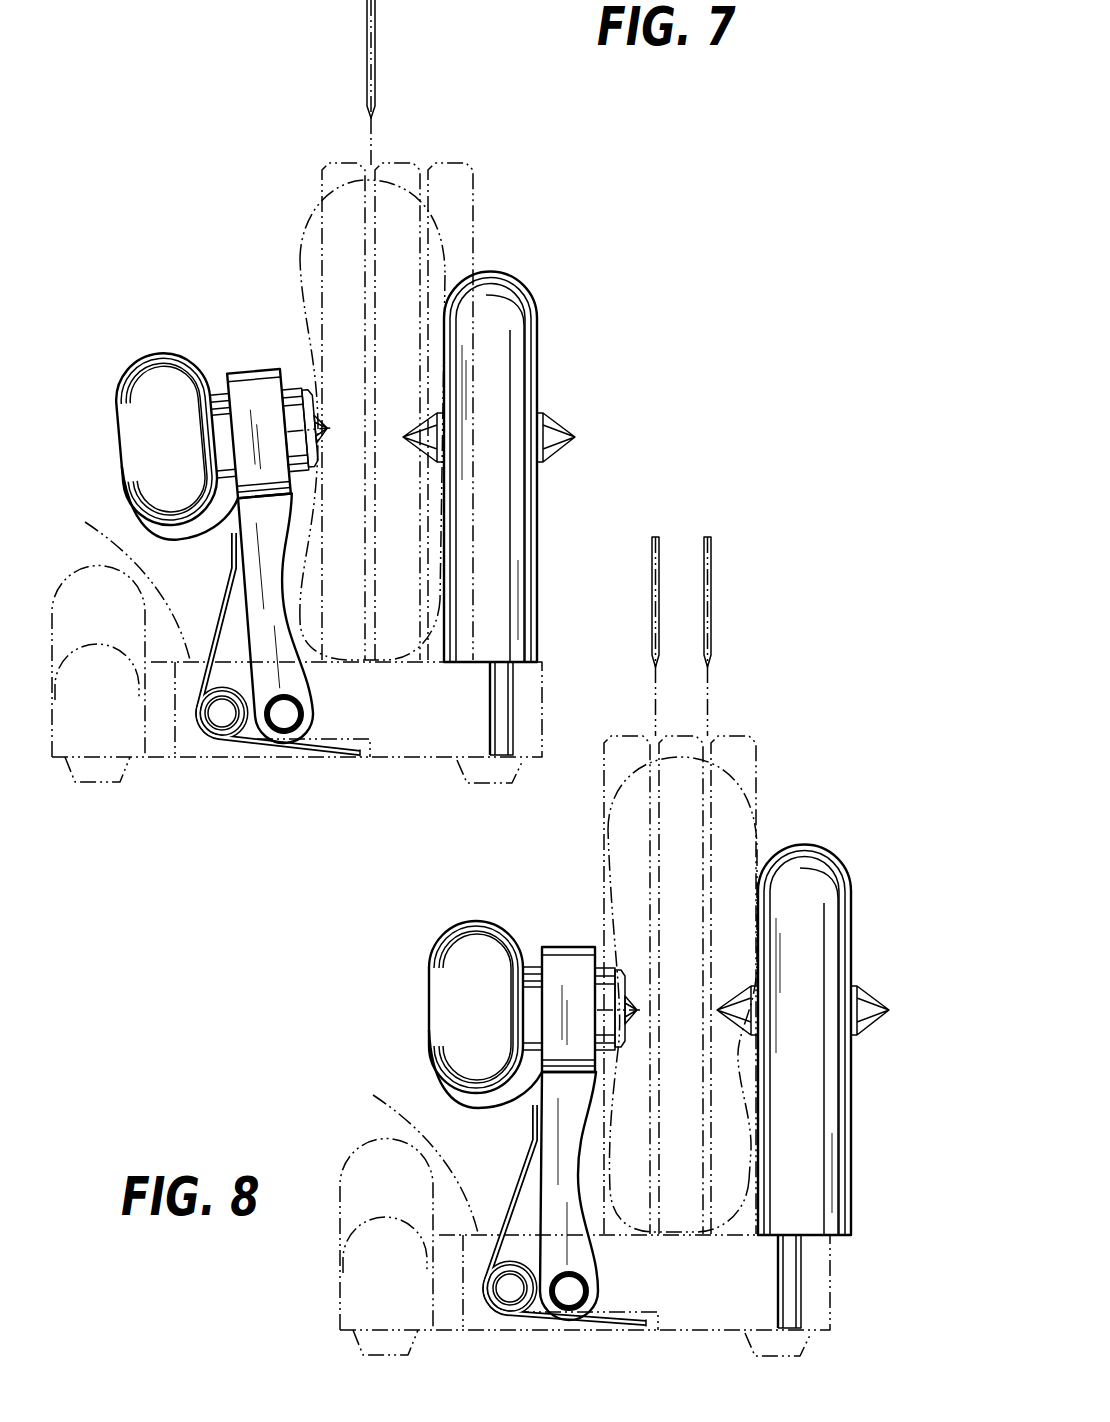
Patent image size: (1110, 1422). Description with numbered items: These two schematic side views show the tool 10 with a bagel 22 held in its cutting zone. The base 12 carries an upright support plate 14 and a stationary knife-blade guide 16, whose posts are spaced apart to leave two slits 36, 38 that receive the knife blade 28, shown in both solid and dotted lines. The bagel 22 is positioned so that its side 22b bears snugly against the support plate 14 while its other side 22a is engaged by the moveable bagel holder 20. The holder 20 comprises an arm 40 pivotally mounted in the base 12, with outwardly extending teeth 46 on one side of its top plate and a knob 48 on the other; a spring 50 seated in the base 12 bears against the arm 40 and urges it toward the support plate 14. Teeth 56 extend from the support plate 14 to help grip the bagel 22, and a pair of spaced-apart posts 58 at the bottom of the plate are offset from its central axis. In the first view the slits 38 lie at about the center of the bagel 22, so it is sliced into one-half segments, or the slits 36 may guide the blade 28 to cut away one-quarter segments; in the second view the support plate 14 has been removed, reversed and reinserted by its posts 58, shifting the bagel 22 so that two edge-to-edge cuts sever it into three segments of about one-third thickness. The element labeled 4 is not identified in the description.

In FIG. 8, the cartridge housing 4 is at (803, 1175).
In FIG. 7, the tool 10 is at (583, 324).
In FIG. 8, the tool 10 is at (868, 1073).
In FIG. 7, the base 12 is at (295, 641).
In FIG. 8, the base 12 is at (585, 1213).
In FIG. 7, the support plate 14 is at (520, 276).
In FIG. 8, the support plate 14 is at (822, 850).
In FIG. 7, the knife-blade guide 16 is at (497, 190).
In FIG. 8, the knife-blade guide 16 is at (770, 728).
In FIG. 7, the bagel holder 20 is at (151, 333).
In FIG. 8, the bagel holder 20 is at (452, 872).
In FIG. 7, the bagel 22 is at (296, 198).
In FIG. 8, the bagel 22 is at (763, 789).
In FIG. 7, the other side of the bagel 22a is at (297, 287).
In FIG. 8, the other side of the bagel 22a is at (607, 858).
In FIG. 7, the side of the bagel 22b is at (450, 265).
In FIG. 8, the side of the bagel 22b is at (757, 865).
In FIG. 7, the knife blade 28 is at (367, 37).
In FIG. 8, the knife blade 28 is at (668, 553).
In FIG. 7, the slit 36 is at (432, 152).
In FIG. 8, the slit 36 is at (715, 735).
In FIG. 7, the slit 38 is at (367, 147).
In FIG. 8, the slit 38 is at (653, 727).
In FIG. 7, the arm 40 is at (140, 545).
In FIG. 8, the arm 40 is at (450, 1100).
In FIG. 7, the teeth 46 is at (312, 433).
In FIG. 8, the teeth 46 is at (625, 1005).
In FIG. 7, the knob 48 is at (152, 362).
In FIG. 8, the knob 48 is at (446, 927).
In FIG. 7, the spring 50 is at (225, 628).
In FIG. 8, the spring 50 is at (523, 1200).
In FIG. 7, the teeth 56 is at (430, 418).
In FIG. 8, the teeth 56 is at (747, 995).
In FIG. 7, the posts 58 is at (490, 712).
In FIG. 8, the posts 58 is at (776, 1285).